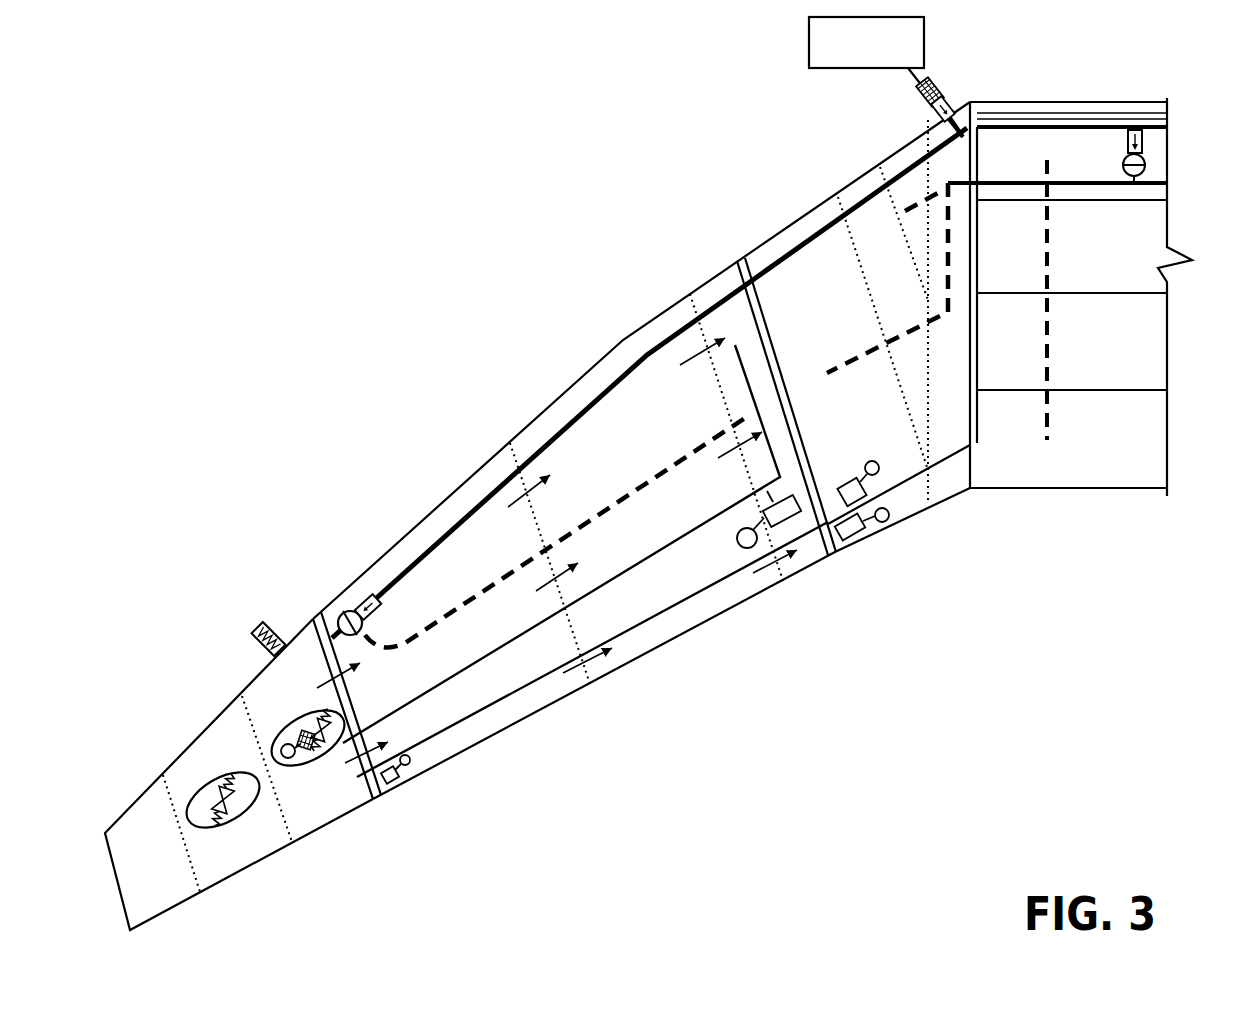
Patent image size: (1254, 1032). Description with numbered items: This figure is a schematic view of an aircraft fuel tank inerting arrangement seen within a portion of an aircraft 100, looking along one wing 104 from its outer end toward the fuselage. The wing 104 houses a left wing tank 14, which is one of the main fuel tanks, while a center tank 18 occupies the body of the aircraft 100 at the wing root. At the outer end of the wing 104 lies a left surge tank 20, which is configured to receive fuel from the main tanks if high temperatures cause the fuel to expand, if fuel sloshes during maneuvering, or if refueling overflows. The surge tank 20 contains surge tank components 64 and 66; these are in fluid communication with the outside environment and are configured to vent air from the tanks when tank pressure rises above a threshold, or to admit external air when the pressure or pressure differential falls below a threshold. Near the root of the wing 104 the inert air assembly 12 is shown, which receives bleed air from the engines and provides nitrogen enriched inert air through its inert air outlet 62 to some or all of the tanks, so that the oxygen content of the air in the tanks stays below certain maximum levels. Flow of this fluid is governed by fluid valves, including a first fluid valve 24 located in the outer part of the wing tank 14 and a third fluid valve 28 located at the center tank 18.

The aircraft 100 is at (416, 196).
The wing 104 is at (578, 362).
The left wing tank 14 is at (432, 527).
The first fluid valve 24 is at (342, 612).
The left surge tank 20 is at (228, 855).
The surge tank component 66 is at (230, 773).
The surge tank component 64 is at (313, 762).
The center tank 18 is at (1083, 140).
The third fluid valve 28 is at (1147, 165).
The inert air assembly 12 is at (857, 56).
The inert air outlet 62 is at (956, 93).